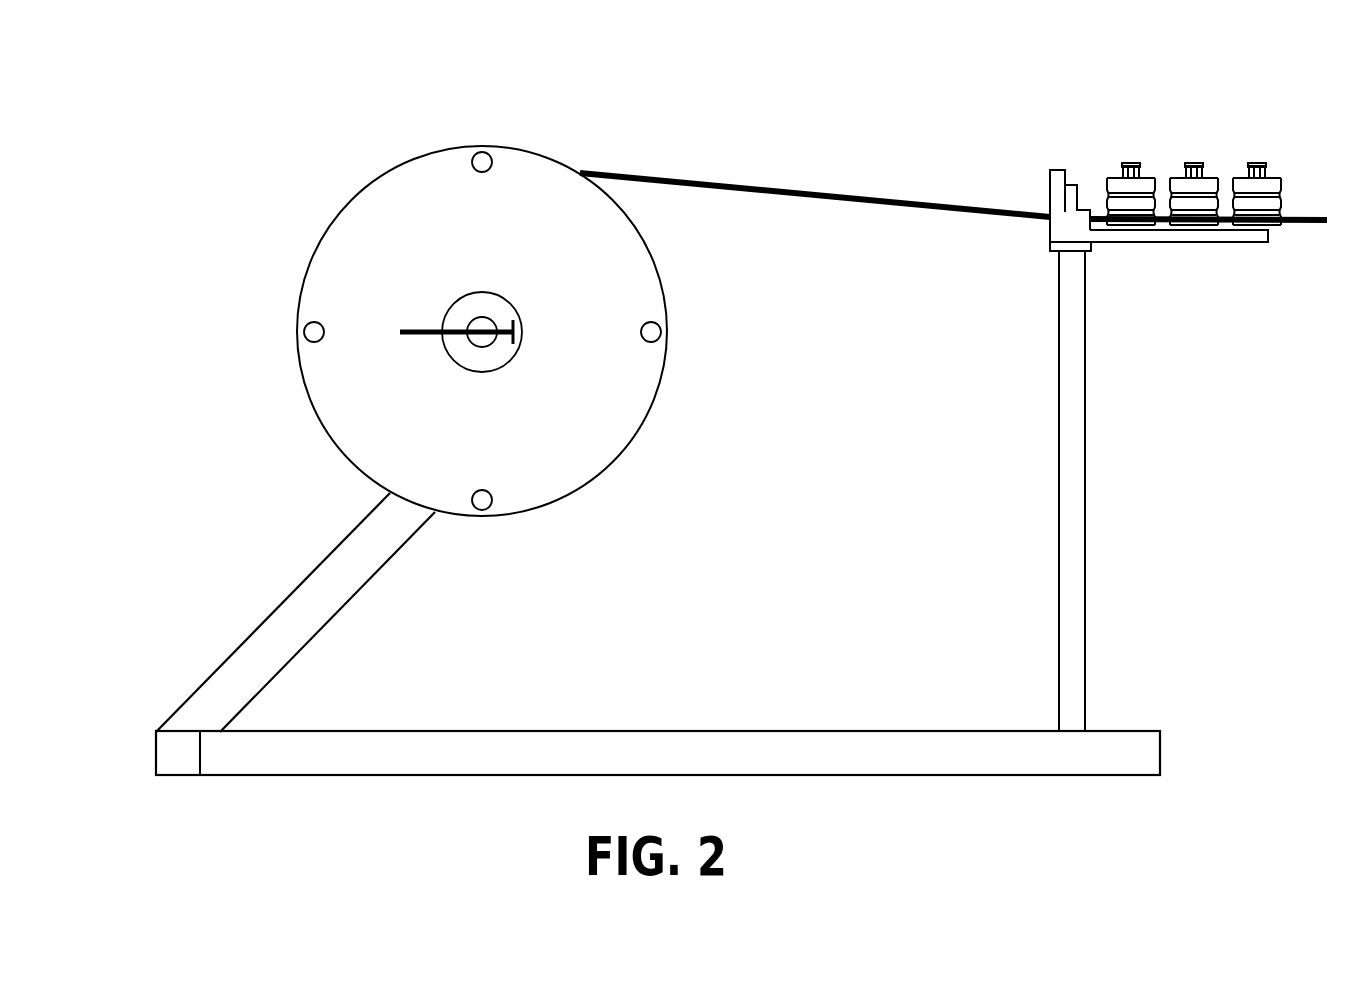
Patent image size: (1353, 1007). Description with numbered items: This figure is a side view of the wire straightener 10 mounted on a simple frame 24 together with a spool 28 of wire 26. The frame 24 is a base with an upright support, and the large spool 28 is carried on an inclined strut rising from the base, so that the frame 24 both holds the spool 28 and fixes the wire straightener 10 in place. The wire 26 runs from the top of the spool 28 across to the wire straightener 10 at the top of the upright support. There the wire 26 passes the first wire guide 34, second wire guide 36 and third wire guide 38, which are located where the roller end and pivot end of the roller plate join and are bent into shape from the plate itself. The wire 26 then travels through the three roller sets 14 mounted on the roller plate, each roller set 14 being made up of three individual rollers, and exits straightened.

The wire straightener 10 is at (741, 400).
The roller sets 14 is at (1137, 167).
The frame 24 is at (647, 740).
The wire 26 is at (862, 198).
The spool 28 is at (597, 430).
The first wire guide 34 is at (1085, 208).
The second wire guide 36 is at (1037, 134).
The third wire guide 38 is at (1050, 188).